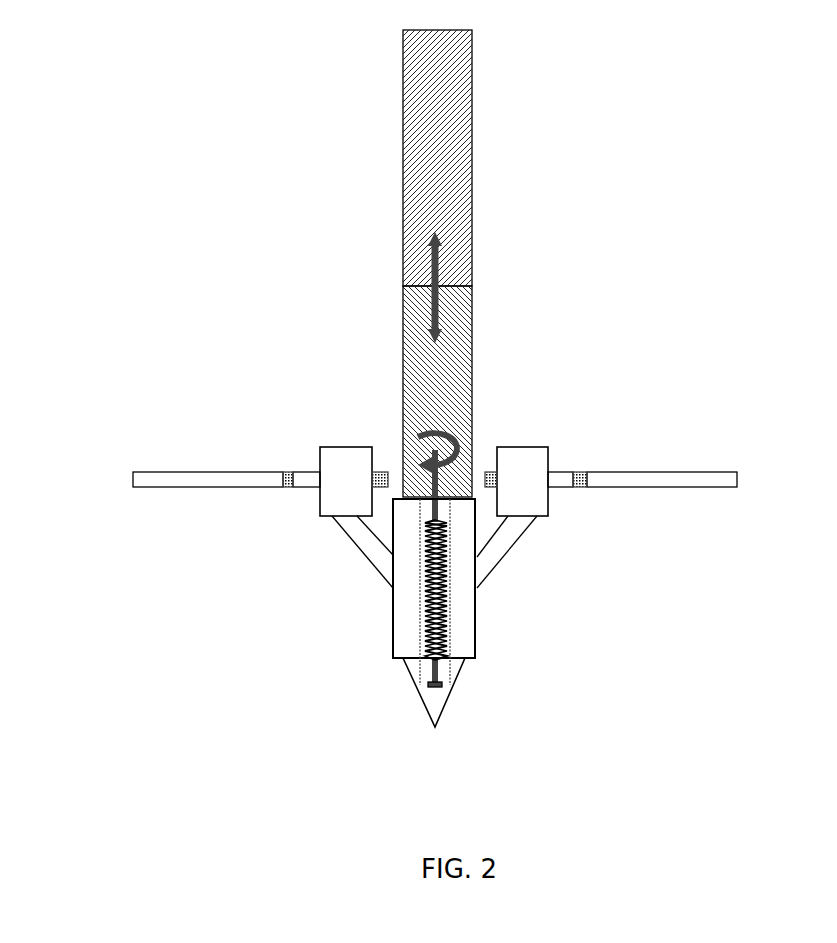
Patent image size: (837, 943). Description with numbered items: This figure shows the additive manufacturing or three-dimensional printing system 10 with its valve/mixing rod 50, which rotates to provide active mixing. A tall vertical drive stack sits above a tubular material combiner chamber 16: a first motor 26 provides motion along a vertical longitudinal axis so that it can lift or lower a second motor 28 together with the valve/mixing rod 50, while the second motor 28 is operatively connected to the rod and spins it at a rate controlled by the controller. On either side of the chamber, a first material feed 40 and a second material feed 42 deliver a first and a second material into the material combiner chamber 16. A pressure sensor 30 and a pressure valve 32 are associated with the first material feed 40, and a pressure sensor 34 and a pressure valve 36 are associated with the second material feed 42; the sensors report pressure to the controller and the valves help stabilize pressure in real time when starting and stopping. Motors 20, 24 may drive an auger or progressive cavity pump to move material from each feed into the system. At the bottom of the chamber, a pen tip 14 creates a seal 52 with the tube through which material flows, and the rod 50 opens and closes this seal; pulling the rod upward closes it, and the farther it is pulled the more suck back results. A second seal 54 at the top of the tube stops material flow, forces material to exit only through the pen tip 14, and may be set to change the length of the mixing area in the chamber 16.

The 3D printing system 10 is at (188, 141).
The pen tip 14 is at (445, 713).
The material combiner chamber 16 is at (473, 633).
The motor 20 is at (356, 517).
The motor 24 is at (512, 517).
The first motor 26 is at (473, 150).
The second motor 28 is at (473, 387).
The pressure sensor 30 is at (290, 488).
The pressure valve 32 is at (384, 470).
The pressure sensor 34 is at (574, 488).
The pressure valve 36 is at (487, 471).
The first material feed 40 is at (162, 474).
The second material feed 42 is at (722, 480).
The valve/mixing rod 50 is at (433, 623).
The seal 52 is at (430, 687).
The second seal 54 is at (426, 495).